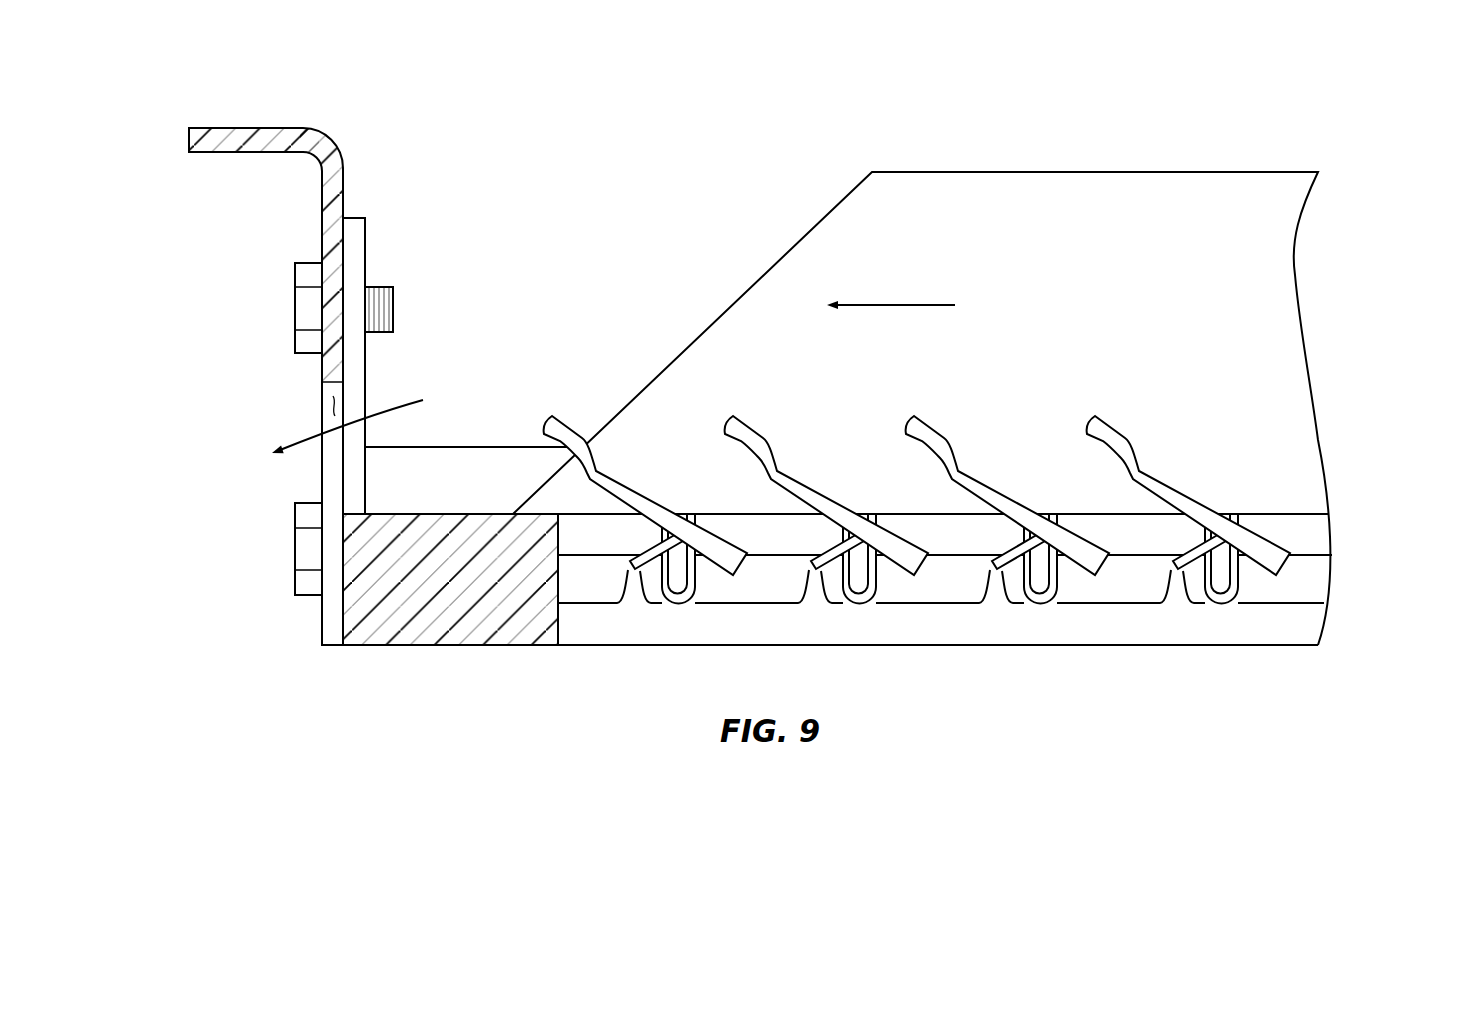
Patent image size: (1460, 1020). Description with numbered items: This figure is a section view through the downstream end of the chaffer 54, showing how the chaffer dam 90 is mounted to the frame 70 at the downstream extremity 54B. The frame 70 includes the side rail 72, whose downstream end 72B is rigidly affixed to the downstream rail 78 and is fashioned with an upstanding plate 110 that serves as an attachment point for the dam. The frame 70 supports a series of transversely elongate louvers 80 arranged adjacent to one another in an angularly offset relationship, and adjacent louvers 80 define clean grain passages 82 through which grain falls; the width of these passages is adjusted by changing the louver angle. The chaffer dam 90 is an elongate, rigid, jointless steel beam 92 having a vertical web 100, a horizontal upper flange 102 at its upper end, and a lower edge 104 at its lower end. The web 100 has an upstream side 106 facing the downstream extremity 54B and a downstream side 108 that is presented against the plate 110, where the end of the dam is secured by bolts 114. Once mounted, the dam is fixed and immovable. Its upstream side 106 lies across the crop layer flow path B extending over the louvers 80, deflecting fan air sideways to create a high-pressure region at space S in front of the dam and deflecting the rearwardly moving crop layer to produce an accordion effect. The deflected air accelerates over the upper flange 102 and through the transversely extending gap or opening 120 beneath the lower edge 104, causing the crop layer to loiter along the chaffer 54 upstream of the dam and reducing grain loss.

The chaffer 54 is at (1352, 580).
The downstream extremity of chaffer 54B is at (358, 640).
The frame 70 is at (1085, 632).
The side rail 72 is at (540, 463).
The downstream end of side rail 72B is at (378, 470).
The downstream rail 78 is at (520, 628).
The louver 80 is at (632, 467).
The clean grain passage 82 is at (699, 470).
The chaffer dam 90 is at (280, 348).
The beam 92 is at (306, 348).
The vertical web 100 is at (338, 253).
The upper flange 102 is at (268, 128).
The lower edge 104 is at (325, 383).
The upstream side 106 is at (345, 282).
The downstream side 108 is at (321, 232).
The upstanding plate 110 is at (358, 380).
The bolt 114 is at (297, 302).
The gap or opening 120 is at (330, 407).
The crop layer flow path B is at (896, 304).
The space S is at (500, 278).